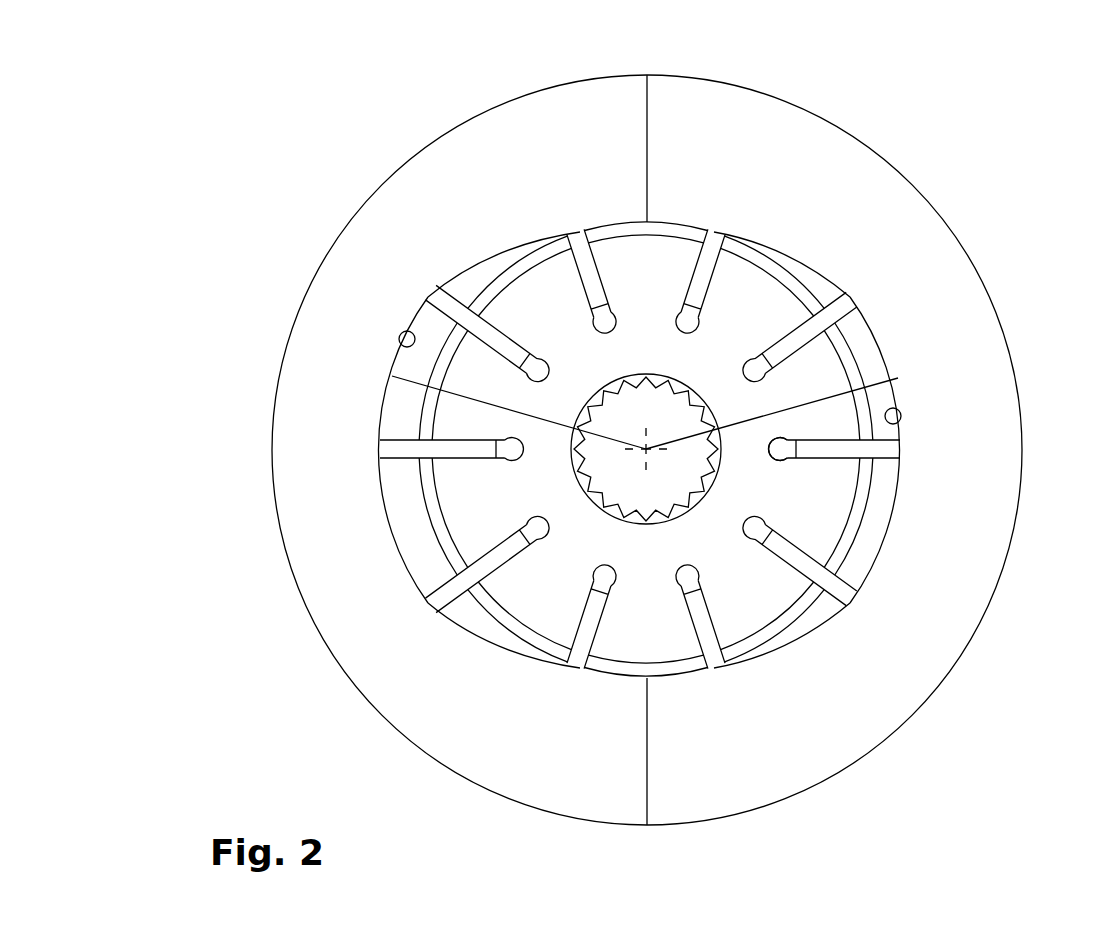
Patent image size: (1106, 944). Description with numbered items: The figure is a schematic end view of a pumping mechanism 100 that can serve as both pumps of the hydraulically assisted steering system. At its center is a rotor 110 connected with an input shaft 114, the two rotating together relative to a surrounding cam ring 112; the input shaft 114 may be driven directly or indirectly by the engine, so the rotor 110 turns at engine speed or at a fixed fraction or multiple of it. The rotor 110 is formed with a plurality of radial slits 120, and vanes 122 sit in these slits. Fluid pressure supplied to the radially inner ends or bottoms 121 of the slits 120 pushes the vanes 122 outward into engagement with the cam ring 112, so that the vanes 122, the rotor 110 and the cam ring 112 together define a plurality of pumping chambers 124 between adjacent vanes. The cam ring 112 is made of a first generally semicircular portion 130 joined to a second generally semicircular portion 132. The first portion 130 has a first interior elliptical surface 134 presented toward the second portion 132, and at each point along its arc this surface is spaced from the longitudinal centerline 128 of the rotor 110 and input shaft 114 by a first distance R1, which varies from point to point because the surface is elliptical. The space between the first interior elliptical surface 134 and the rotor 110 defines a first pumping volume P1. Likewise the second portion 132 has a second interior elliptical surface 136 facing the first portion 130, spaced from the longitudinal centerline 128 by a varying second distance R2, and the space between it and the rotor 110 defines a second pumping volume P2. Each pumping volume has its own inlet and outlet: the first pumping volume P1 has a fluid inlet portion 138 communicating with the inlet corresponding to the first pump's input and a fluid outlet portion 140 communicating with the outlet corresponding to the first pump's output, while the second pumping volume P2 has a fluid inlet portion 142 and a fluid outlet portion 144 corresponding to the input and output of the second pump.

The pumping mechanism 100 is at (208, 190).
The rotor 110 is at (747, 583).
The cam ring 112 is at (768, 130).
The input shaft 114 is at (617, 468).
The radial slits 120 is at (527, 350).
The radially inner ends or bottoms of the slits 121 is at (783, 460).
The vanes 122 is at (652, 428).
The pumping chambers 124 is at (412, 527).
The longitudinal centerline 128 is at (647, 450).
The first generally semicircular portion 130 is at (458, 176).
The second generally semicircular portion 132 is at (810, 147).
The first interior elliptical surface 134 is at (400, 340).
The second interior elliptical surface 136 is at (898, 407).
The fluid inlet portion of the first pumping volume 138 is at (480, 615).
The fluid outlet portion of the first pumping volume 140 is at (468, 297).
The fluid inlet portion of the second pumping volume 142 is at (762, 320).
The fluid outlet portion of the second pumping volume 144 is at (812, 610).
The first pumping volume P1 is at (400, 414).
The second pumping volume P2 is at (860, 347).
The first distance R1 is at (550, 421).
The second distance R2 is at (743, 416).